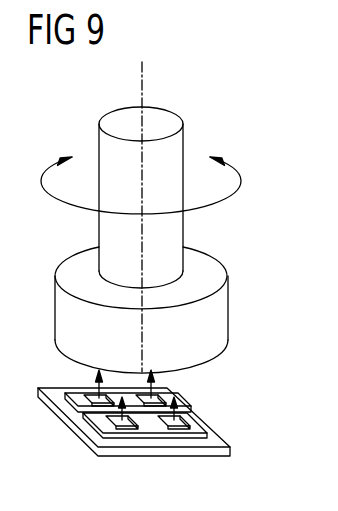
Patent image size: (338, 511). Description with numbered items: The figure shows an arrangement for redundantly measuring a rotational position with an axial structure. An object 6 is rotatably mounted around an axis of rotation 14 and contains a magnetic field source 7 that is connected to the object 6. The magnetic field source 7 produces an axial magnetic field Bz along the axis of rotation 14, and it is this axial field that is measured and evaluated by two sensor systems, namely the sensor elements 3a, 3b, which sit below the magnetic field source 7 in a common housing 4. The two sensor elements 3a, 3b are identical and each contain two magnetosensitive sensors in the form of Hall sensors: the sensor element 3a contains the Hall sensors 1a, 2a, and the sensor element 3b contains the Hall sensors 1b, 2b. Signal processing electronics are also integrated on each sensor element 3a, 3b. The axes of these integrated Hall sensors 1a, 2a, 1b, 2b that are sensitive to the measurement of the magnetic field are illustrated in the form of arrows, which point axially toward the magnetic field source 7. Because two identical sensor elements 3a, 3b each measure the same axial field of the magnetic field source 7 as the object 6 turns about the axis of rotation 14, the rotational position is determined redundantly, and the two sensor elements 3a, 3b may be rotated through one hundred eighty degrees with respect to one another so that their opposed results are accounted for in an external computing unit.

The Hall sensor 1a is at (130, 437).
The Hall sensor 1b is at (170, 384).
The Hall sensor 2a is at (184, 404).
The Hall sensor 2b is at (72, 409).
The sensor element 3a is at (181, 446).
The sensor element 3b is at (72, 390).
The common housing 4 is at (232, 452).
The object 6 is at (180, 229).
The magnetic field source 7 is at (222, 321).
The axis of rotation 14 is at (143, 74).